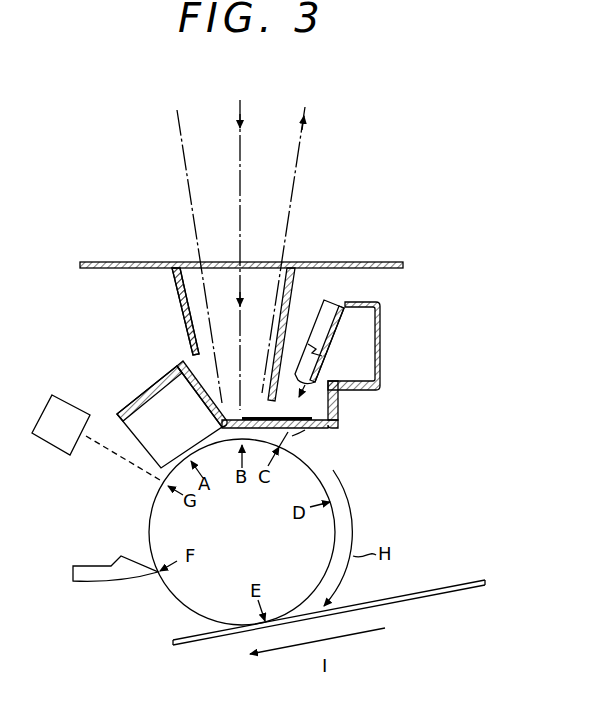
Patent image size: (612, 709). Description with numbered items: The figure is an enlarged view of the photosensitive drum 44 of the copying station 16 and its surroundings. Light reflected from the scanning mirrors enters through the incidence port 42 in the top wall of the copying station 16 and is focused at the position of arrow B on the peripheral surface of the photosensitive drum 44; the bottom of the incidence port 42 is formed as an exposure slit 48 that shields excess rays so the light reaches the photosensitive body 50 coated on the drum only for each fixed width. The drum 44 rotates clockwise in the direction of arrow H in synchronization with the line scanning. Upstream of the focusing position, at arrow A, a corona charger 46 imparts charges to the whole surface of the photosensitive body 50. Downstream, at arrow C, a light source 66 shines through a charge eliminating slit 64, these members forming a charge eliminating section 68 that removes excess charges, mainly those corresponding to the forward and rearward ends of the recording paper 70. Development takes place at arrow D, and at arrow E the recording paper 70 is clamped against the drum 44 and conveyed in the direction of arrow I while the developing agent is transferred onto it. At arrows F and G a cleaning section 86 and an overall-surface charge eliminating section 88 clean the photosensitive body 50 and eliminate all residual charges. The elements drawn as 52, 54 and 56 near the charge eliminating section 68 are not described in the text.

The copying station 16 is at (460, 260).
The incidence port 42 is at (185, 276).
The photosensitive drum 44 is at (342, 530).
The corona charger 46 is at (147, 383).
The exposure slit 48 is at (212, 413).
The photosensitive body 50 is at (340, 484).
The guide assembly 52 is at (326, 413).
The lower guide plate 54 is at (331, 429).
The upright guide wall 56 is at (258, 406).
The charge eliminating slit 64 is at (292, 436).
The light source 66 is at (306, 337).
The charge eliminating section 68 is at (357, 337).
The recording paper 70 is at (466, 584).
The cleaning section 86 is at (96, 583).
The overall-surface charge eliminating section 88 is at (47, 444).